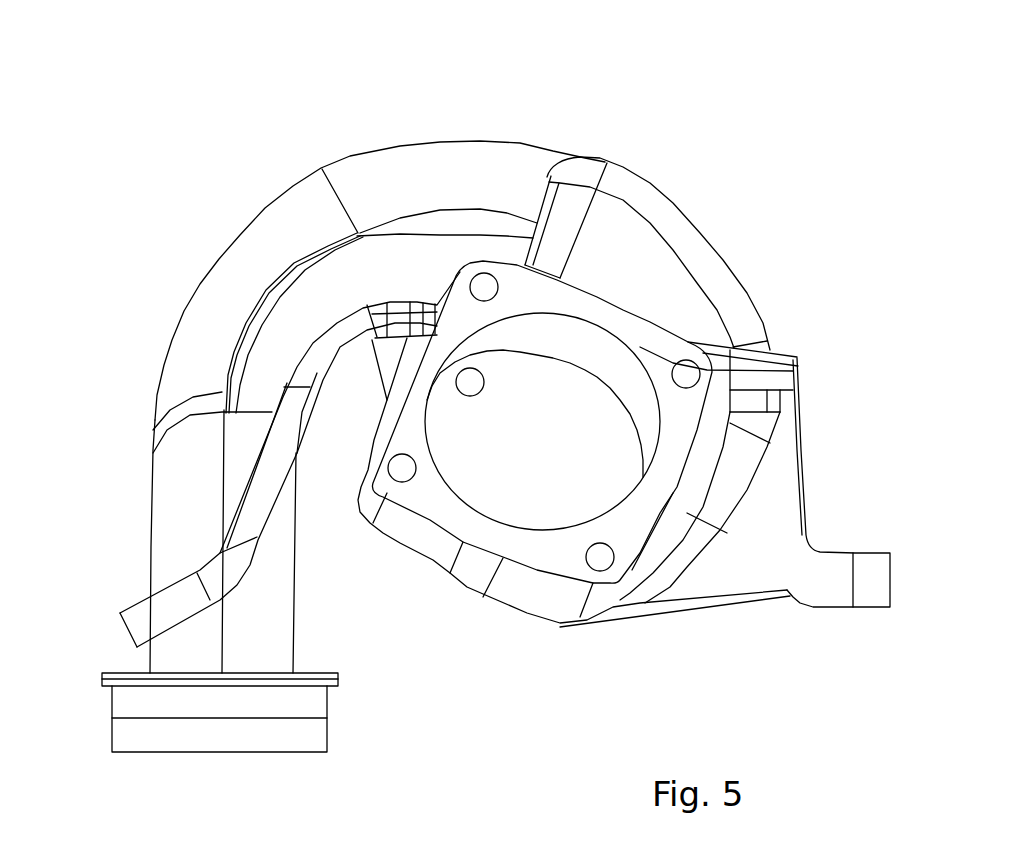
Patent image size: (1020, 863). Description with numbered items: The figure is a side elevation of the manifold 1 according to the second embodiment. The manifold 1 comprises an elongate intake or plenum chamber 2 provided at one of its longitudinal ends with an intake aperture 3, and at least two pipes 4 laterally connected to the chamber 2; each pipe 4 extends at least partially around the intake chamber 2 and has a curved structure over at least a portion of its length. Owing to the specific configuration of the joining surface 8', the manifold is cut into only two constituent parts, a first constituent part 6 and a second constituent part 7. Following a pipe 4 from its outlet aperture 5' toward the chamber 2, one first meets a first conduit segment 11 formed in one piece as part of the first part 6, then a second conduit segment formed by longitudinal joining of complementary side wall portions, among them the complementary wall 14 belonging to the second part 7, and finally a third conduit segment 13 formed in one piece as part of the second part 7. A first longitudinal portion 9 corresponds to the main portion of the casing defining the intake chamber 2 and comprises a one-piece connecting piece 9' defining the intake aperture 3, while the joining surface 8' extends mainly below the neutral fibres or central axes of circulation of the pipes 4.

The manifold 1 is at (656, 574).
The intake chamber 2 is at (654, 421).
The intake aperture 3 is at (611, 384).
The pipe 4 is at (331, 350).
The outlet aperture 5' is at (220, 760).
The first constituent part 6 is at (725, 546).
The second constituent part 7 is at (447, 127).
The joining surface 8' is at (292, 371).
The first longitudinal portion 9 is at (700, 553).
The connecting piece 9' is at (572, 502).
The first conduit segment 11 is at (290, 472).
The third conduit segment 13 is at (659, 218).
The complementary wall 14 is at (223, 311).